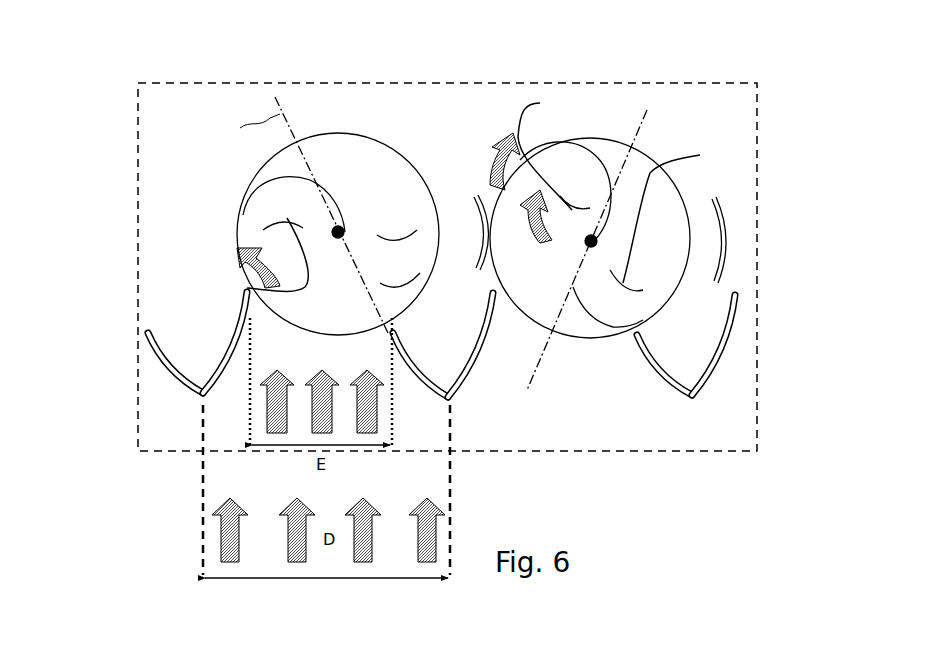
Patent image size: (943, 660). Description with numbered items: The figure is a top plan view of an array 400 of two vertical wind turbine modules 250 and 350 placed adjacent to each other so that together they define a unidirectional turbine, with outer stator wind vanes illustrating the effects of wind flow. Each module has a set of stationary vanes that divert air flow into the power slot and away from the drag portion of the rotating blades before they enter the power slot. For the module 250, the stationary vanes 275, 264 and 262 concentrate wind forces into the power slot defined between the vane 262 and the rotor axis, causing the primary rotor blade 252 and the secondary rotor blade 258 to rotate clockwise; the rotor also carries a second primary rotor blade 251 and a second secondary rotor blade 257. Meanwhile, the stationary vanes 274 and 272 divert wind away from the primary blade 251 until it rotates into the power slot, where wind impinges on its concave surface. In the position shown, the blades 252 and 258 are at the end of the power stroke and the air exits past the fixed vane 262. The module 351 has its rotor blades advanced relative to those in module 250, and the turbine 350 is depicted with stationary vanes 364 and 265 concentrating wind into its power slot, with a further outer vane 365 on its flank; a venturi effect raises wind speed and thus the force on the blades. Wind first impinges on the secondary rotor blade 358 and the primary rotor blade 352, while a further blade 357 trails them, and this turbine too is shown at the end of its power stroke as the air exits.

The array of VWT modules 400 is at (630, 85).
The VWAT module 350 is at (170, 140).
The primary rotor blade 352 is at (272, 180).
The second rotor blade 357 is at (387, 237).
The VWAT module 351 is at (383, 285).
The secondary rotor blade 358 is at (247, 288).
The VWAT module 250 is at (717, 130).
The primary rotor blade 252 is at (597, 157).
The secondary rotor blade 258 is at (559, 154).
The secondary rotor blade 257 is at (682, 219).
The primary rotor blade 251 is at (593, 320).
The stationary vane 262 is at (473, 225).
The stationary vane 272 is at (722, 243).
The guide vane 365 is at (170, 377).
The stationary vane 364 is at (217, 380).
The stationary vane 265 is at (425, 383).
The stationary vane 264 is at (470, 378).
The stationary vane 275 is at (653, 366).
The stationary vane 274 is at (723, 365).